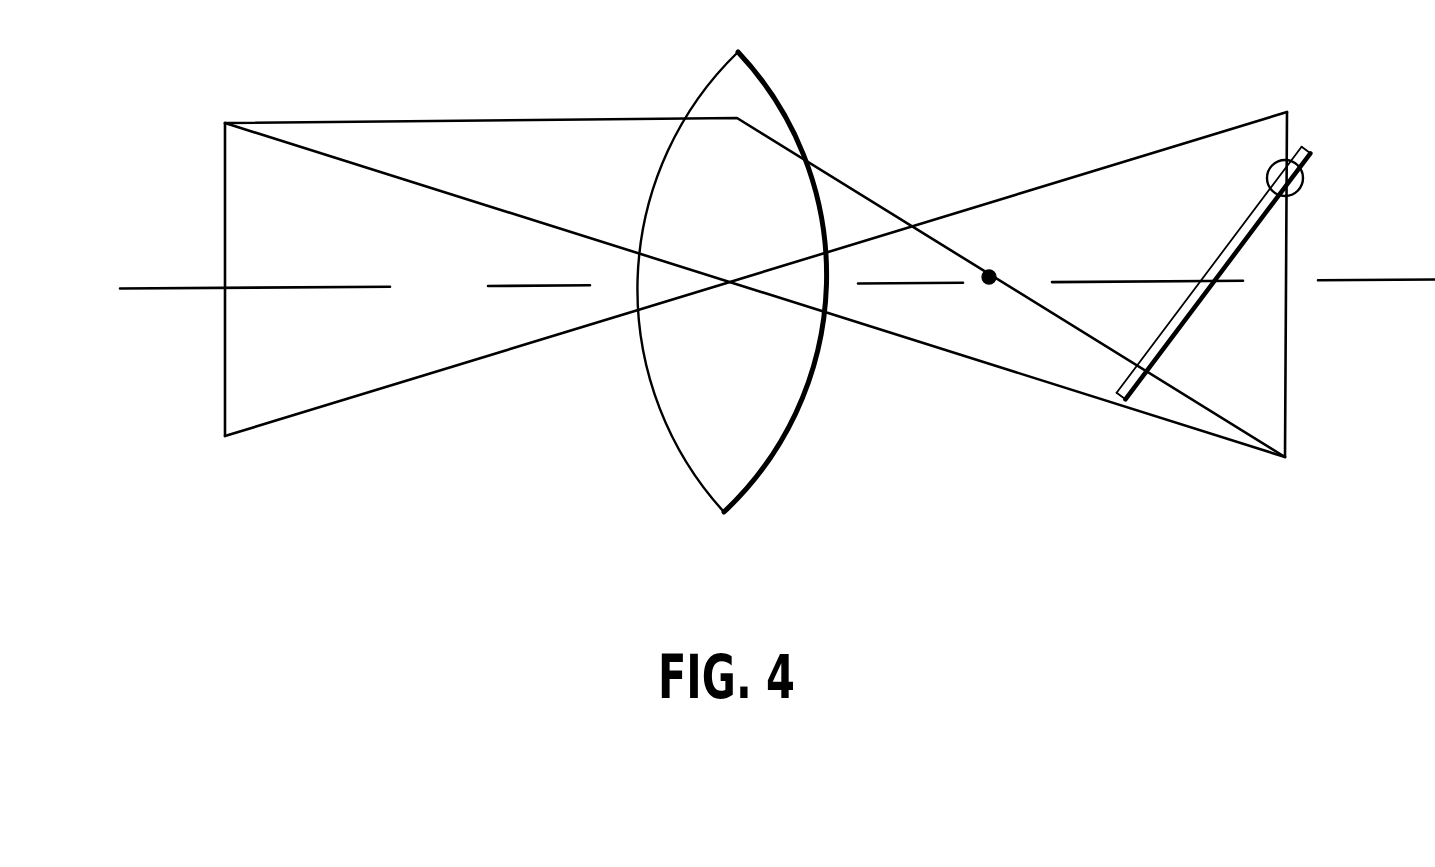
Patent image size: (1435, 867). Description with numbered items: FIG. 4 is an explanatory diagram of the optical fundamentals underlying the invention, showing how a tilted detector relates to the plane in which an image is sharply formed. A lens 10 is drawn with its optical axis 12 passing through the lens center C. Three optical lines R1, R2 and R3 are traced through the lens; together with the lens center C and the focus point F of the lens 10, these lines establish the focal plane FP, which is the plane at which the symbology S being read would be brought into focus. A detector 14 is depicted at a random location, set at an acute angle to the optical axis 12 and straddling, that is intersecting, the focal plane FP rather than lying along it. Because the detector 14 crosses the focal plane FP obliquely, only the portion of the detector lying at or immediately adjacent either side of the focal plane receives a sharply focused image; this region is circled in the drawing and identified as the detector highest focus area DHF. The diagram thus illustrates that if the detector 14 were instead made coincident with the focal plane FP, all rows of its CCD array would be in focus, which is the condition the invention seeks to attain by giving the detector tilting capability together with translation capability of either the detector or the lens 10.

The symbology S is at (225, 158).
The optical line R1 is at (513, 118).
The optical line R2 is at (518, 215).
The optical line R3 is at (475, 362).
The lens 10 is at (773, 85).
The optical axis 12 is at (337, 287).
The lens center C is at (728, 287).
The focus point F is at (989, 277).
The focal plane FP is at (1288, 130).
The detector highest focus area DHF is at (1303, 182).
The detector 14 is at (1198, 293).